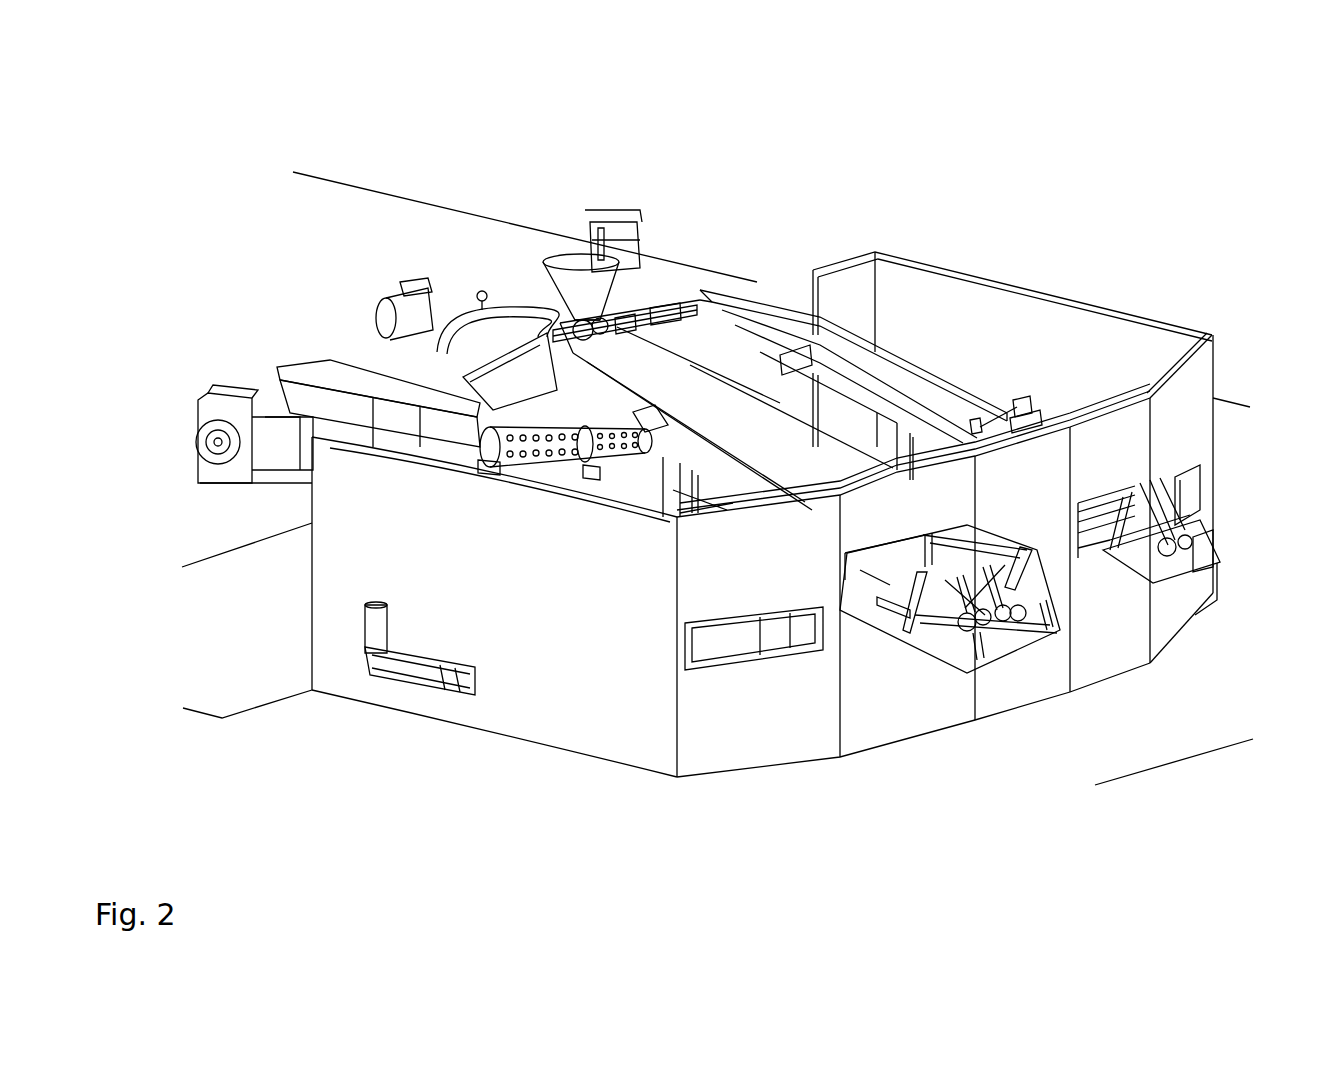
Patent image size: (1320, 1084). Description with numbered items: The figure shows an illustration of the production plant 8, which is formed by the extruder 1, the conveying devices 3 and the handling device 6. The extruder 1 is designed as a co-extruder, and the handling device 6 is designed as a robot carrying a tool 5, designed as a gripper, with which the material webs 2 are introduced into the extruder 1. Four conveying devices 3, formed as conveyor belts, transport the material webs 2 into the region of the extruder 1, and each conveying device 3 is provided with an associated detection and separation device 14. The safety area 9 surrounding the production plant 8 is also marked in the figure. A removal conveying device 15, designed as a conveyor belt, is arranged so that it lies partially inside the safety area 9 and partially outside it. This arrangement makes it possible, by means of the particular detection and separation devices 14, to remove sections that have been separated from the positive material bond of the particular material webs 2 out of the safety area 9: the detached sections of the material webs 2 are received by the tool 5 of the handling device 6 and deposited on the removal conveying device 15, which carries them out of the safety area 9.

The extruder 1 is at (333, 398).
The material web 2 is at (519, 380).
The conveying device 3 is at (944, 656).
The tool 5 is at (640, 318).
The handling device 6 is at (616, 257).
The production plant 8 is at (947, 220).
The safety area 9 is at (1003, 317).
The detection and separation device 14 is at (1025, 416).
The removal conveying device 15 is at (435, 675).